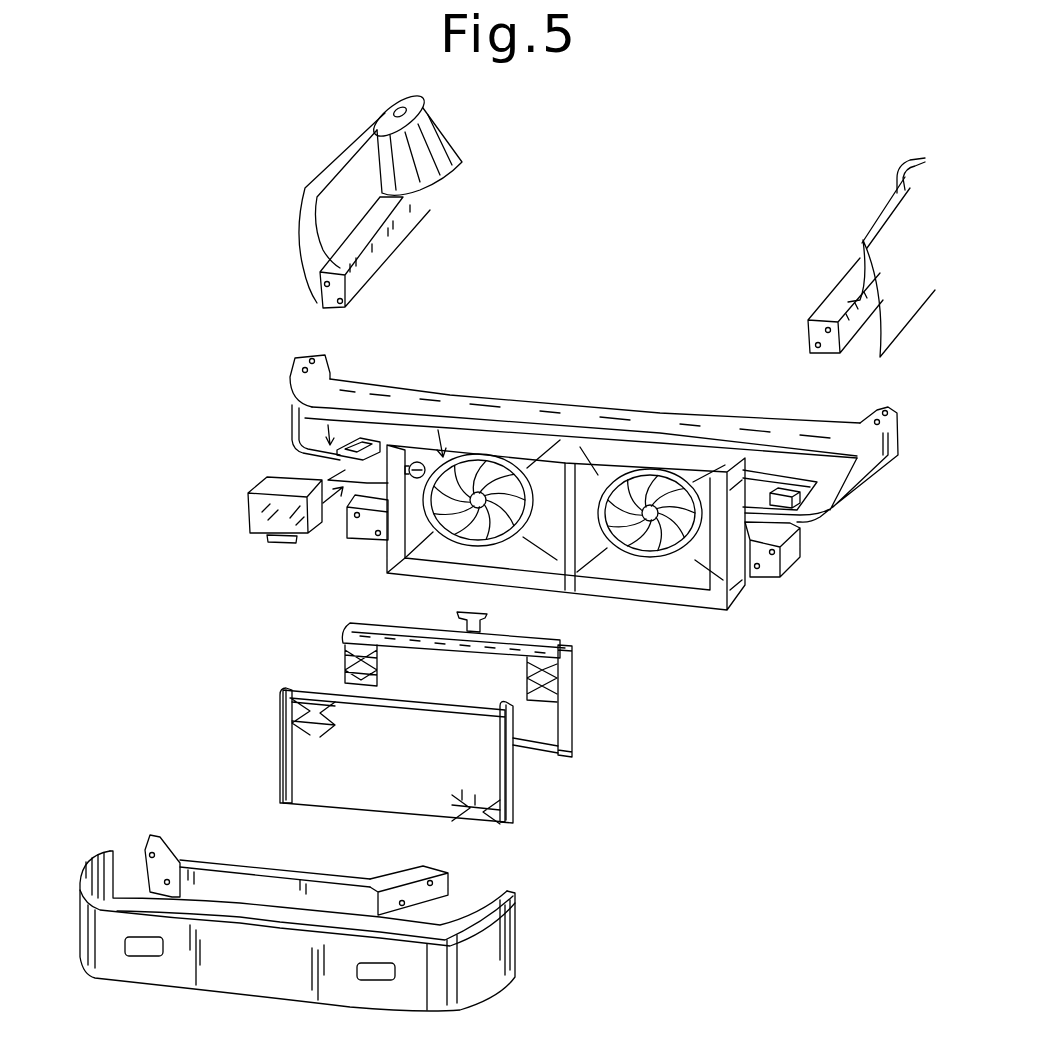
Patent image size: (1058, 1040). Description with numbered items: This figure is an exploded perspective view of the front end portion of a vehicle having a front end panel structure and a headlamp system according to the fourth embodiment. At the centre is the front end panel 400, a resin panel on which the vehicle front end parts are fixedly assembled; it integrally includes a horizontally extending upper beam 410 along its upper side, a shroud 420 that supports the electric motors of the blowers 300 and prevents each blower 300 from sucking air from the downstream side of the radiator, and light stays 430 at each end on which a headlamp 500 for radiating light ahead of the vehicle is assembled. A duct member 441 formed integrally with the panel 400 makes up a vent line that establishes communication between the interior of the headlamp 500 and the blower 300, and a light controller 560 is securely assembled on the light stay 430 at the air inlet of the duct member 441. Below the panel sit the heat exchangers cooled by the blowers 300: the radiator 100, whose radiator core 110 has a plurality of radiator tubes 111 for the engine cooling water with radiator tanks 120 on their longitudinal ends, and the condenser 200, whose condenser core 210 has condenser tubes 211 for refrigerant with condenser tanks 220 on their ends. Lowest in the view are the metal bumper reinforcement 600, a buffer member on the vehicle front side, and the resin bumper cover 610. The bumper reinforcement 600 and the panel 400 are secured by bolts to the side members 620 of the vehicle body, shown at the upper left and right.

The radiator 100 is at (583, 694).
The radiator core 110 is at (424, 662).
The radiator tubes 111 is at (347, 672).
The radiator tanks 120 is at (568, 642).
The condenser 200 is at (528, 796).
The condenser core 210 is at (329, 778).
The condenser tubes 211 is at (300, 715).
The condenser tanks 220 is at (283, 705).
The blower 300 is at (478, 545).
The front end panel 400 is at (597, 400).
The upper beam 410 is at (505, 405).
The shroud 420 is at (412, 535).
The light stay 430 is at (290, 422).
The duct member 441 is at (360, 447).
The headlamp 500 is at (267, 483).
The light controller 560 is at (275, 547).
The bumper reinforcement 600 is at (450, 872).
The bumper cover 610 is at (480, 985).
The side members 620 is at (332, 170).